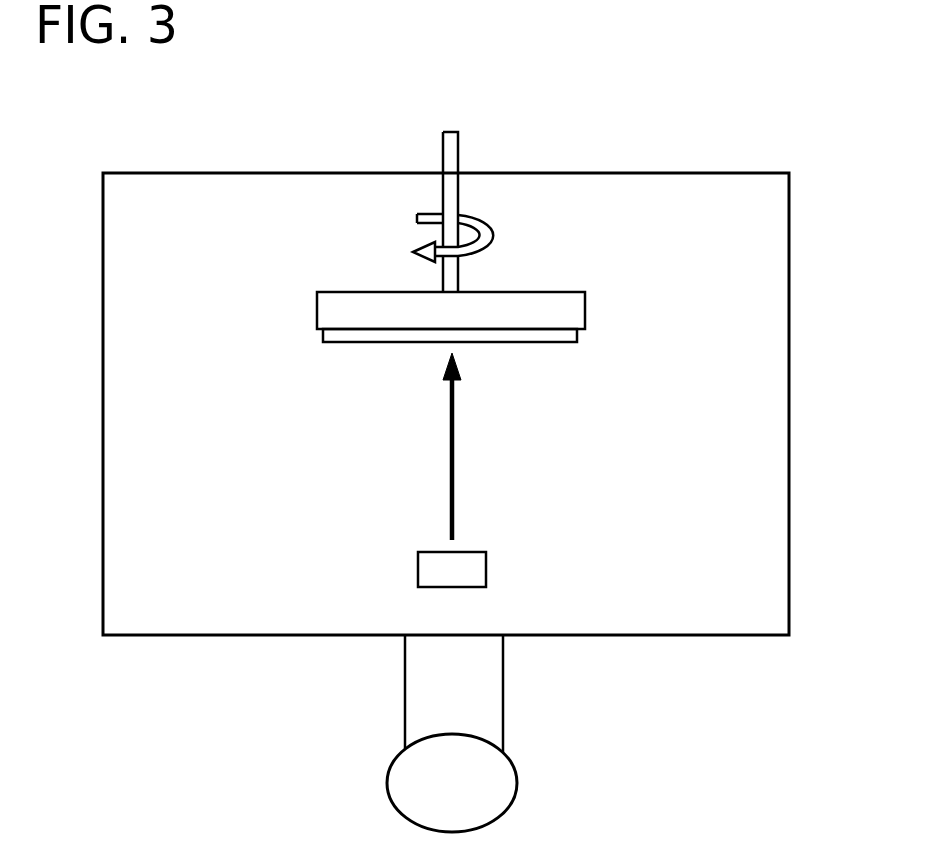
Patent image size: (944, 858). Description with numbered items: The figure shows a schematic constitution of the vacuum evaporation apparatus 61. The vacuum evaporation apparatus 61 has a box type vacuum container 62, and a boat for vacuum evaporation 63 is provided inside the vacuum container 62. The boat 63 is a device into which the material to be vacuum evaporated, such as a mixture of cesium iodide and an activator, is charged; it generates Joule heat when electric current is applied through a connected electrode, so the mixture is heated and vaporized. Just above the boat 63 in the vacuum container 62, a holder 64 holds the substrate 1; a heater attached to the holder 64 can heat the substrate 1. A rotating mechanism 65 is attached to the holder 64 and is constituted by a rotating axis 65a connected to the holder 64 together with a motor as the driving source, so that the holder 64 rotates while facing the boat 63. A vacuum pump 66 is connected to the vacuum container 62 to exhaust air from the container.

The vacuum evaporation apparatus 61 is at (621, 118).
The vacuum container 62 is at (789, 226).
The boat for vacuum evaporation 63 is at (486, 568).
The holder 64 is at (556, 292).
The rotating mechanism 65 is at (454, 212).
The rotating axis 65a is at (450, 190).
The substrate 1 is at (577, 336).
The vacuum pump 66 is at (518, 783).